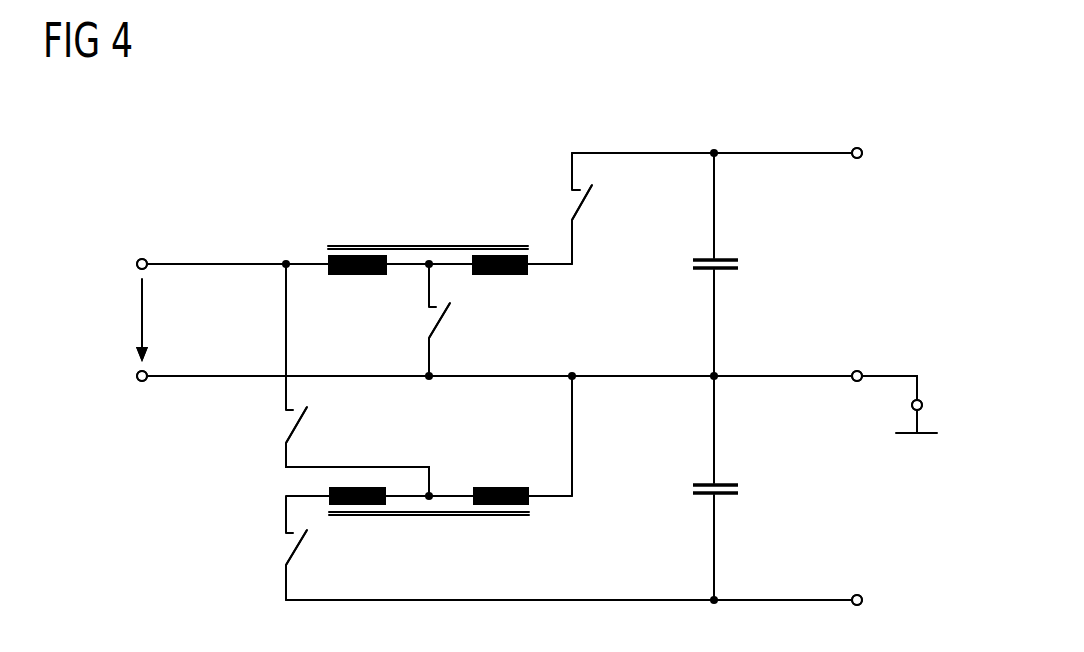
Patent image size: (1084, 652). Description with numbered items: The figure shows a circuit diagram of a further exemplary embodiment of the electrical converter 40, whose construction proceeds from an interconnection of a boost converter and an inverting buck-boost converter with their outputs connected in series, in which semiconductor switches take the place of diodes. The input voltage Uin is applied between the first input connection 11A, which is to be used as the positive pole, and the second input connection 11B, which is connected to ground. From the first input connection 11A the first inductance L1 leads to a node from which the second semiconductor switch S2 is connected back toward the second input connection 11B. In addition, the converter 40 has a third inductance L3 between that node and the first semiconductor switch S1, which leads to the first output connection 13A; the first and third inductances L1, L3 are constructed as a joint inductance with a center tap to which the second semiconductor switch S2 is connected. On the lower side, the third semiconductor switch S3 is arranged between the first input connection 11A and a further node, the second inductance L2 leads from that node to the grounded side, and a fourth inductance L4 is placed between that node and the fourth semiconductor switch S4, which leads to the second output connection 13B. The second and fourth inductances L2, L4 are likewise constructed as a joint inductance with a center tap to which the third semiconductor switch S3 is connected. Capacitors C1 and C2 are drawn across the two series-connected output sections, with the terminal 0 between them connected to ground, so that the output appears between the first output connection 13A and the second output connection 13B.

The converter 40 is at (308, 119).
The first input connection 11A is at (137, 265).
The second input connection 11B is at (137, 376).
The input voltage Uin is at (138, 314).
The first inductance L1 is at (357, 255).
The second inductance L2 is at (495, 505).
The third inductance L3 is at (501, 255).
The fourth inductance L4 is at (378, 505).
The first semiconductor switch S1 is at (585, 203).
The second semiconductor switch S2 is at (440, 326).
The third semiconductor switch S3 is at (300, 428).
The fourth semiconductor switch S4 is at (300, 551).
The first capacitor C1 is at (724, 271).
The second capacitor C2 is at (724, 496).
The first output connection 13A is at (863, 153).
The second output connection 13B is at (863, 600).
The neutral / ground terminal 0 is at (897, 397).